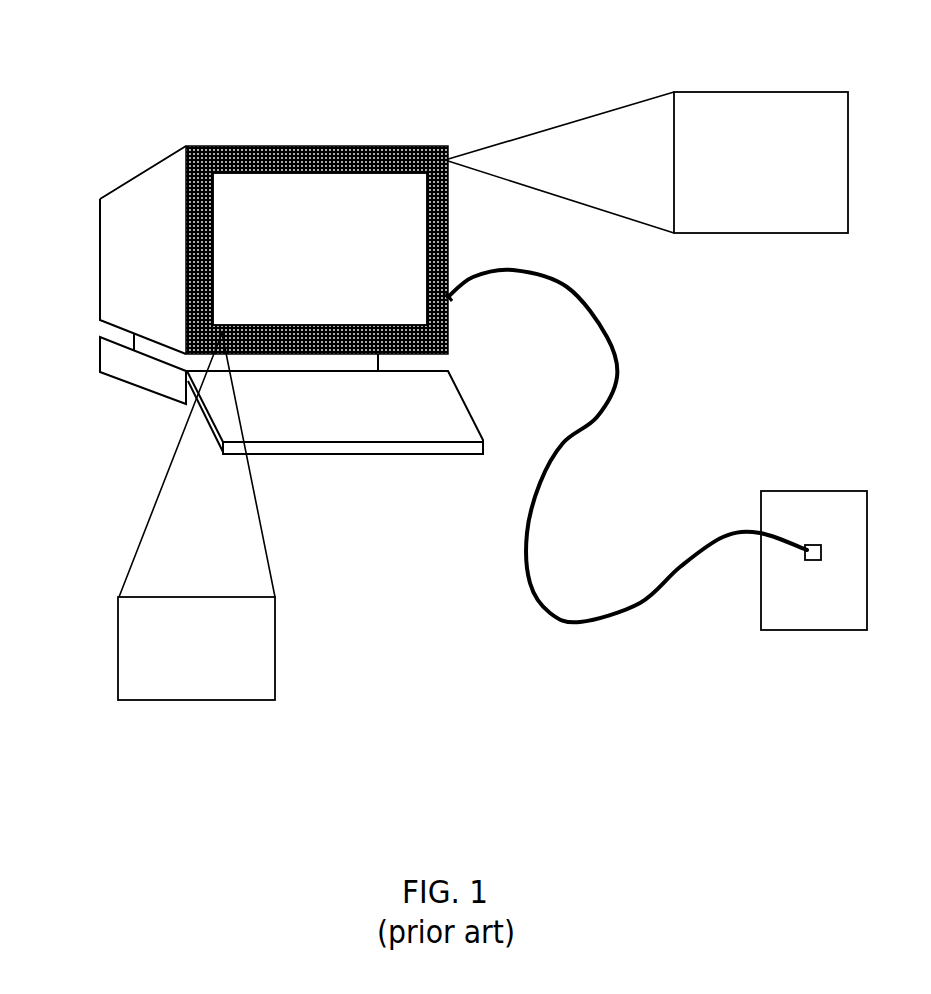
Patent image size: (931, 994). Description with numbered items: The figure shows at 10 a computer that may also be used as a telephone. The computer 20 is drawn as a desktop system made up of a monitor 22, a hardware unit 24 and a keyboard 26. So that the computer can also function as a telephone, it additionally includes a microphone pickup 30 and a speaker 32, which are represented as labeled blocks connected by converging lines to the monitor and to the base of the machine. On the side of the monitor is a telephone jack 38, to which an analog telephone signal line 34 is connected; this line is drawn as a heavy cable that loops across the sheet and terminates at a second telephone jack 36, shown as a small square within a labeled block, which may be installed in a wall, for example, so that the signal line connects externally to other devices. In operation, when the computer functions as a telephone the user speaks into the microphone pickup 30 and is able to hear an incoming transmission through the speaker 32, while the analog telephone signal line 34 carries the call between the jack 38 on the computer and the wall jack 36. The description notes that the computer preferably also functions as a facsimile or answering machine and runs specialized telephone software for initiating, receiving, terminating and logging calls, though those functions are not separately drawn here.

The computer usable as a telephone 10 is at (186, 64).
The computer 20 is at (100, 247).
The monitor 22 is at (338, 217).
The hardware unit 24 is at (133, 386).
The keyboard 26 is at (394, 456).
The microphone pickup 30 is at (792, 233).
The speaker 32 is at (203, 702).
The analog telephone signal line 34 is at (559, 618).
The telephone jack 36 is at (867, 555).
The telephone jack 38 is at (448, 301).